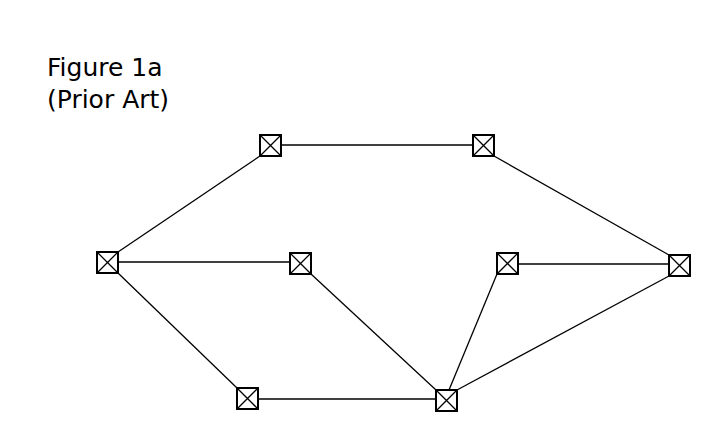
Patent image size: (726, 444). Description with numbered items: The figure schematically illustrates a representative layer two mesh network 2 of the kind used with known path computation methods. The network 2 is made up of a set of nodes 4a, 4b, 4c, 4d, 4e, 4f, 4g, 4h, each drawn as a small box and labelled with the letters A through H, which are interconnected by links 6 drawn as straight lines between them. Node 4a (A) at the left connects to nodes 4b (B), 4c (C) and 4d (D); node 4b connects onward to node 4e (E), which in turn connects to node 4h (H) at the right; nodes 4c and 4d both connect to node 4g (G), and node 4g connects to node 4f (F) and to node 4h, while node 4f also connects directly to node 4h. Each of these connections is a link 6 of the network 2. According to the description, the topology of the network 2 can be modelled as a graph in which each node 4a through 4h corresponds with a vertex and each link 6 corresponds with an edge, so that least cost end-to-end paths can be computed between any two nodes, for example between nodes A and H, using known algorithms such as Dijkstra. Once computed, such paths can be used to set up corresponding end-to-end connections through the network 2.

The mesh network 2 is at (556, 139).
The node 4a is at (108, 251).
The node 4b is at (271, 135).
The node 4c is at (300, 252).
The node 4d is at (250, 388).
The node 4e is at (482, 135).
The node 4f is at (506, 253).
The node 4g is at (457, 401).
The node 4h is at (680, 255).
The link 6 is at (192, 200).